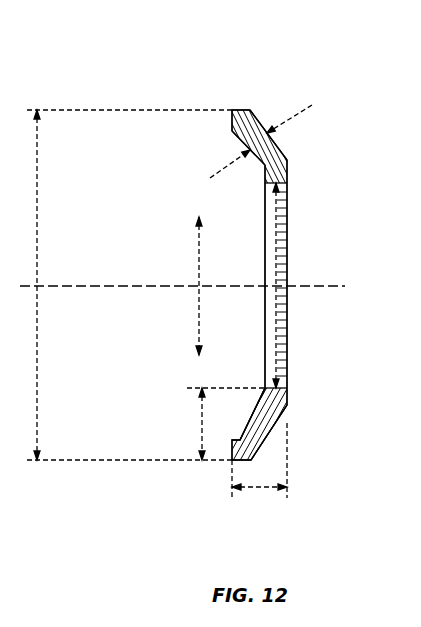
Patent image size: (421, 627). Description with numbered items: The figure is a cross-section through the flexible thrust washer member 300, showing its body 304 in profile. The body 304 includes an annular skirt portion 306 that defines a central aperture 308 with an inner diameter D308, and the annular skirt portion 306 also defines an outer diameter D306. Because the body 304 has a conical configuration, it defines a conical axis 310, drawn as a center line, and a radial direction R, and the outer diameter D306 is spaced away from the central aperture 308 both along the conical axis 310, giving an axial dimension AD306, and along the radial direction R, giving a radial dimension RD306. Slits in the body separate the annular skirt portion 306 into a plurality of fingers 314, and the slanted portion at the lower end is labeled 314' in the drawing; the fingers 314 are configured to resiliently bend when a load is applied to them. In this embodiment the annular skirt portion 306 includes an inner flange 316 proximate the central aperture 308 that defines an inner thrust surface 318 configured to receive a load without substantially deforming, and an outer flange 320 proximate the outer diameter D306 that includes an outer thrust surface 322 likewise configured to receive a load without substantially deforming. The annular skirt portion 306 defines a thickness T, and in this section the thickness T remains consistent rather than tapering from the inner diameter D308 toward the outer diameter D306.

The flexible thrust washer member 300 is at (274, 72).
The body 304 is at (302, 251).
The annular skirt portion 306 is at (283, 417).
The central aperture 308 is at (287, 353).
The conical axis 310 is at (342, 288).
The fingers 314 is at (298, 144).
The lower angled flange 314' is at (289, 434).
The inner flange 316 is at (287, 173).
The inner thrust surface 318 is at (287, 397).
The outer flange 320 is at (240, 110).
The outer thrust surface 322 is at (232, 123).
The outer diameter D306 is at (37, 243).
The inner diameter D308 is at (278, 273).
The radial direction R is at (200, 272).
The radial dimension RD306 is at (202, 423).
The axial dimension AD306 is at (262, 490).
The thickness T is at (295, 118).